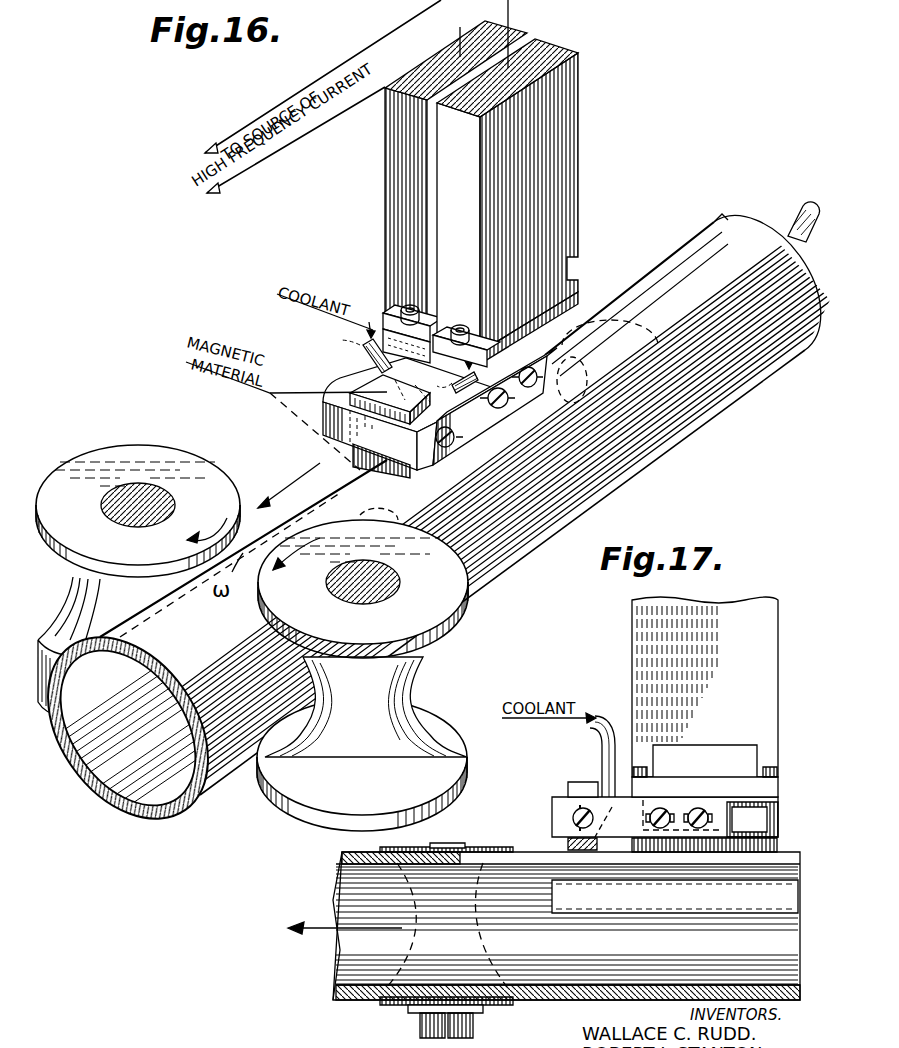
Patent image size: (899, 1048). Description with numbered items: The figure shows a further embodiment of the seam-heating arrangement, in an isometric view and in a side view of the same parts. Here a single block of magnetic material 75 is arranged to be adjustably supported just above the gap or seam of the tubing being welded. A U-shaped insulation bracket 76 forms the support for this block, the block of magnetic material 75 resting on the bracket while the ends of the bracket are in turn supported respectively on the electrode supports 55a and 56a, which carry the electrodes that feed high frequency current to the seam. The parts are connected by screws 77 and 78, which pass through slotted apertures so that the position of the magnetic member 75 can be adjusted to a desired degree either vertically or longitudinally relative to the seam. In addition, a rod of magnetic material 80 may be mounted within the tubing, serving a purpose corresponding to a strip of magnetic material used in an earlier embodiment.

In FIG. 16, the electrode support 55a is at (396, 170).
In FIG. 16, the electrode support 56a is at (572, 168).
In FIG. 17, the electrode support 56a is at (632, 646).
In FIG. 16, the block of magnetic material 75 is at (415, 466).
In FIG. 17, the block of magnetic material 75 is at (573, 765).
In FIG. 16, the U-shaped insulation bracket 76 is at (462, 426).
In FIG. 17, the U-shaped insulation bracket 76 is at (556, 806).
In FIG. 17, the screw 77 is at (573, 819).
In FIG. 17, the screw 78 is at (694, 808).
In FIG. 16, the rod of magnetic material 80 is at (522, 436).
In FIG. 17, the rod of magnetic material 80 is at (672, 914).